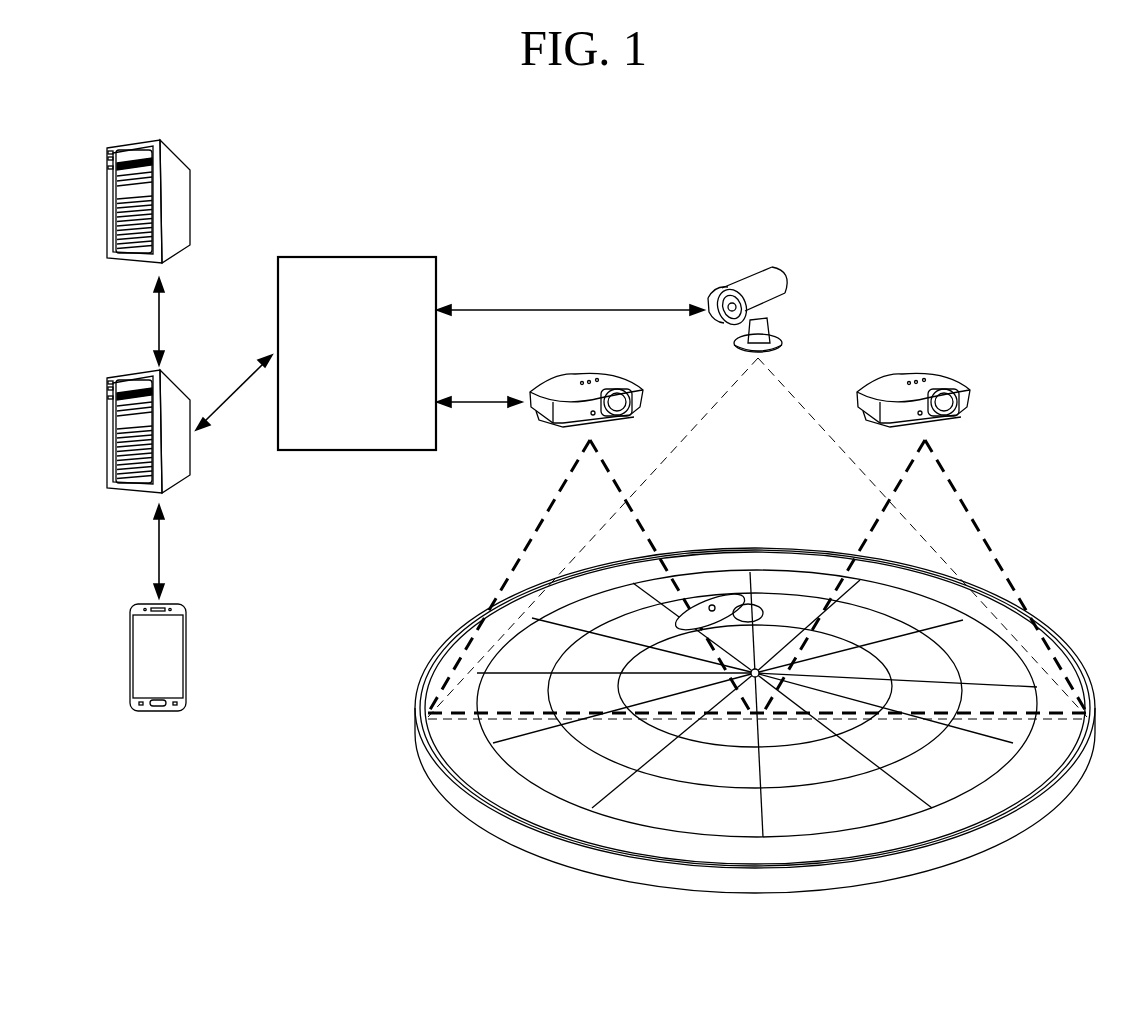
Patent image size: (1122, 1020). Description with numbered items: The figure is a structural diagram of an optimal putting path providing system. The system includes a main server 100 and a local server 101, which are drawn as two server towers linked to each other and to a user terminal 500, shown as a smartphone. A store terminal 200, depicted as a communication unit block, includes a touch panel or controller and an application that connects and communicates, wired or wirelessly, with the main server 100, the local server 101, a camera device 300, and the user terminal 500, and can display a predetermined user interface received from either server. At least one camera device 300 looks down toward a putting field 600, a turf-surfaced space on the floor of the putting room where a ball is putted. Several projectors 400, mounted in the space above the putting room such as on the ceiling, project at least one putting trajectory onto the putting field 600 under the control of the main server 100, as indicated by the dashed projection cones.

The main server 100 is at (176, 380).
The local server 101 is at (176, 150).
The store terminal 200 is at (386, 256).
The camera device 300 is at (784, 280).
The projector 400 is at (953, 378).
The user terminal 500 is at (186, 634).
The putting field 600 is at (1046, 630).